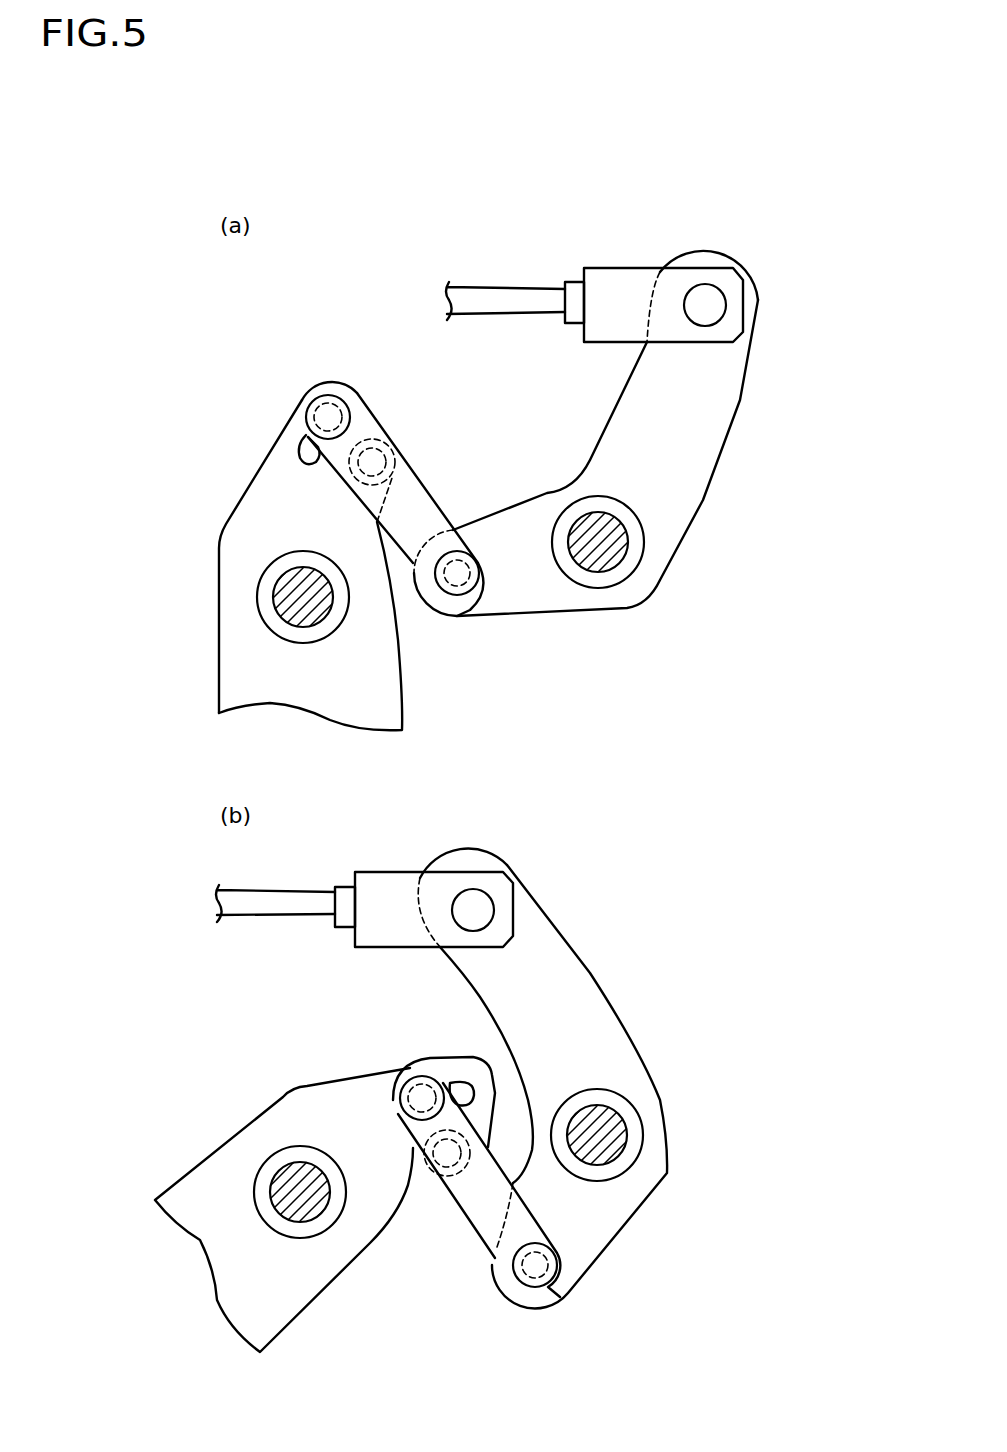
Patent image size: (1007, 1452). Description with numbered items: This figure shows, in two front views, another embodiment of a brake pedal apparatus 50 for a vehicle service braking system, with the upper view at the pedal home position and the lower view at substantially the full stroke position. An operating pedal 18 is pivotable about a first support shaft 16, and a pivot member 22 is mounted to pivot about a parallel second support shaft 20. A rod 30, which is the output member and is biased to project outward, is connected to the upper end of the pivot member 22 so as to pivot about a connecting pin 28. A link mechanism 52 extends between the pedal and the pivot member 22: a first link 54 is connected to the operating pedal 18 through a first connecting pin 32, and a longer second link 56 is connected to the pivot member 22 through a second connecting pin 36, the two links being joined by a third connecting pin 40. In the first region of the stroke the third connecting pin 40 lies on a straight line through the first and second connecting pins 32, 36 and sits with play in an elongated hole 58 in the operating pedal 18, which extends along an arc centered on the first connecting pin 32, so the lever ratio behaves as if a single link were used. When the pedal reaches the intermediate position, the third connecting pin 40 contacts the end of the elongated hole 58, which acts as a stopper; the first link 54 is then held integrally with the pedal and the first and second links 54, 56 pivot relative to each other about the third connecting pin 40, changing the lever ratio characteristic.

The first support shaft 16 is at (287, 590).
The operating pedal 18 is at (234, 668).
The second support shaft 20 is at (608, 560).
The pivot member 22 is at (705, 440).
The connecting pin 28 is at (705, 297).
The rod 30 is at (489, 300).
The first connecting pin 32 is at (386, 455).
The second connecting pin 36 is at (458, 575).
The third connecting pin 40 is at (332, 412).
The brake pedal apparatus 50 is at (406, 262).
The link mechanism 52 is at (383, 382).
The first link 54 is at (366, 423).
The second link 56 is at (430, 512).
The elongated hole 58 is at (303, 462).